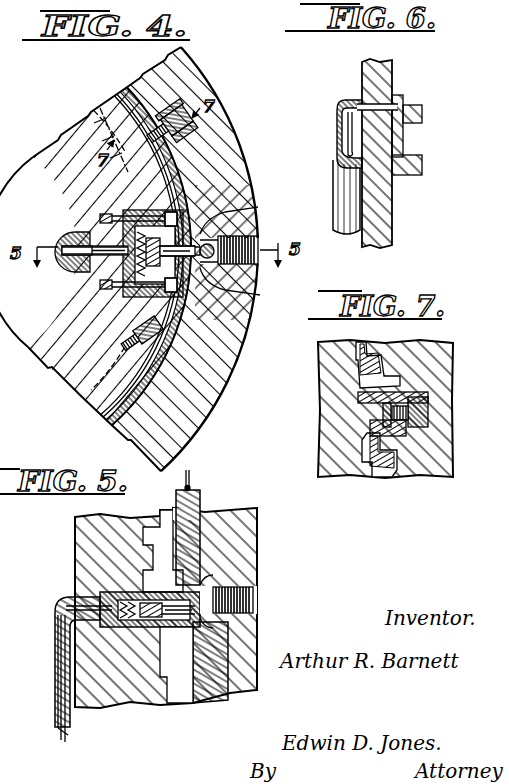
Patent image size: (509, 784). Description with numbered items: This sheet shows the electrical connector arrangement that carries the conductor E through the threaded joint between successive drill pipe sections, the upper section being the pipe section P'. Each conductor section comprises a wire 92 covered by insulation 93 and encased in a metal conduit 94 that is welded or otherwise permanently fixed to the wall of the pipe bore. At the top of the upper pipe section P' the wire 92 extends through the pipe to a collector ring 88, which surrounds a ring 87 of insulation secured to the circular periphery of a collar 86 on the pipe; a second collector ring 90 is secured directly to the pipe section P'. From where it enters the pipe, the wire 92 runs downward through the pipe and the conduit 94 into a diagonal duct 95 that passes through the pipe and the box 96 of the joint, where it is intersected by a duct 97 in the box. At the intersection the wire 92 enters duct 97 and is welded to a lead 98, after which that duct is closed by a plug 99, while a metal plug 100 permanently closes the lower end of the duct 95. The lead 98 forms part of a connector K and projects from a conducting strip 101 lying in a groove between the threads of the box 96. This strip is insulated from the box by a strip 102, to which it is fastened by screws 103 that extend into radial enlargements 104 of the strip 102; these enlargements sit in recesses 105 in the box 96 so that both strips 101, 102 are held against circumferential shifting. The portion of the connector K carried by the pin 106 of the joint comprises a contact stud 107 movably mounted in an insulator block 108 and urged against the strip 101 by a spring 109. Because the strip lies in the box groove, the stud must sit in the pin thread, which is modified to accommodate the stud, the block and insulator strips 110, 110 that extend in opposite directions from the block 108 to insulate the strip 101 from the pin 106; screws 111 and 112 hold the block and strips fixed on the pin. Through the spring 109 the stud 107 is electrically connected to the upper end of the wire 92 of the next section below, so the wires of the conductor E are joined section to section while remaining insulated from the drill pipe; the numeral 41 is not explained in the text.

In FIG. 4, the turbine casing portion 41 is at (3, 449).
In FIG. 6, the collar 86 is at (395, 97).
In FIG. 6, the ring of insulation 87 is at (403, 103).
In FIG. 6, the collector ring 88 is at (422, 113).
In FIG. 6, the second collector ring 90 is at (422, 158).
In FIG. 5, the wire 92 is at (190, 484).
In FIG. 6, the wire 92 is at (350, 100).
In FIG. 5, the insulation 93 is at (199, 489).
In FIG. 6, the insulation 93 is at (343, 113).
In FIG. 4, the metal conduit 94 is at (72, 262).
In FIG. 5, the metal conduit 94 is at (56, 675).
In FIG. 6, the metal conduit 94 is at (337, 128).
In FIG. 5, the diagonal duct 95 is at (205, 512).
In FIG. 6, the diagonal duct 95 is at (373, 130).
In FIG. 4, the box 96 is at (216, 383).
In FIG. 5, the box 96 is at (245, 537).
In FIG. 7, the box 96 is at (432, 350).
In FIG. 4, the duct 97 is at (205, 278).
In FIG. 5, the duct 97 is at (208, 587).
In FIG. 4, the lead 98 is at (207, 262).
In FIG. 5, the lead 98 is at (204, 618).
In FIG. 4, the plug 99 is at (257, 240).
In FIG. 5, the plug 99 is at (253, 590).
In FIG. 5, the metal plug 100 is at (212, 648).
In FIG. 4, the conducting strip 101 is at (118, 88).
In FIG. 5, the conducting strip 101 is at (185, 625).
In FIG. 7, the conducting strip 101 is at (396, 392).
In FIG. 4, the insulating strip 102 is at (132, 87).
In FIG. 7, the insulating strip 102 is at (365, 388).
In FIG. 4, the screws 103 is at (178, 142).
In FIG. 7, the screws 103 is at (415, 437).
In FIG. 4, the radial enlargements 104 is at (207, 105).
In FIG. 7, the radial enlargements 104 is at (430, 427).
In FIG. 4, the recesses 105 is at (187, 115).
In FIG. 7, the recesses 105 is at (430, 400).
In FIG. 4, the pin 106 is at (92, 372).
In FIG. 4, the contact stud 107 is at (205, 228).
In FIG. 5, the contact stud 107 is at (173, 622).
In FIG. 4, the insulator block 108 is at (178, 210).
In FIG. 5, the insulator block 108 is at (125, 597).
In FIG. 4, the spring 109 is at (85, 296).
In FIG. 5, the spring 109 is at (110, 600).
In FIG. 4, the insulator strips 110 is at (120, 100).
In FIG. 7, the insulator strips 110 is at (383, 415).
In FIG. 4, the screw 111 is at (100, 218).
In FIG. 4, the screw 112 is at (153, 178).
In FIG. 4, the connector K is at (215, 234).
In FIG. 5, the connector K is at (140, 582).
In FIG. 4, the conductor E is at (53, 266).
In FIG. 5, the conductor E is at (50, 712).
In FIG. 6, the conductor E is at (331, 168).
In FIG. 6, the upper pipe section P' is at (404, 142).